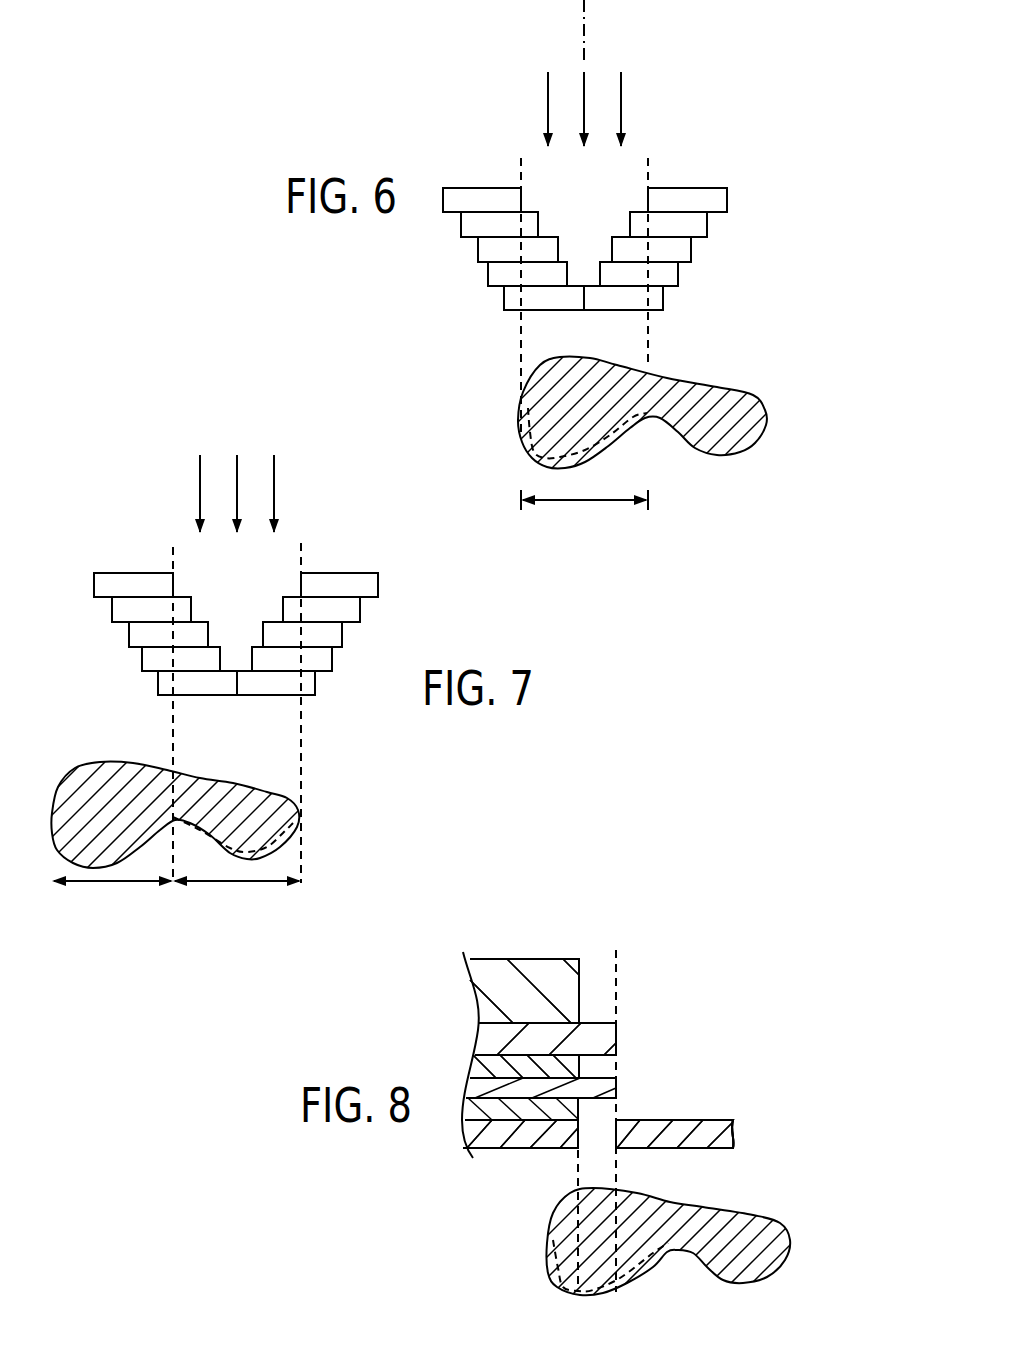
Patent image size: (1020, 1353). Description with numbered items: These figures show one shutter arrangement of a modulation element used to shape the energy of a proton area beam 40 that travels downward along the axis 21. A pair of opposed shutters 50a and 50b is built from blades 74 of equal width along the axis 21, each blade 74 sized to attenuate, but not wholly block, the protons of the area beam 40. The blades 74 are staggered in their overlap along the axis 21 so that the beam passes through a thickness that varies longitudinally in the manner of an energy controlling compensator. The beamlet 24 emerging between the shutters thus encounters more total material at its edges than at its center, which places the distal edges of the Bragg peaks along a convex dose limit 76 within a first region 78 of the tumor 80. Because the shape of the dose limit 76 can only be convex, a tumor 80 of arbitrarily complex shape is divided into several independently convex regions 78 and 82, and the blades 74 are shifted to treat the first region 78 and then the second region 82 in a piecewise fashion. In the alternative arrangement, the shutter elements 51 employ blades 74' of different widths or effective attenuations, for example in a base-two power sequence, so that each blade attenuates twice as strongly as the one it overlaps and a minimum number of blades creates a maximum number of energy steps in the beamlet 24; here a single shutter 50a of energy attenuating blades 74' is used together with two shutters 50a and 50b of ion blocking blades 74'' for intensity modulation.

In FIG. 6, the axis 21 is at (584, 20).
In FIG. 6, the area beam 40 is at (584, 92).
In FIG. 7, the area beam 40 is at (237, 478).
In FIG. 6, the shutter 50a is at (490, 152).
In FIG. 8, the shutter 50a is at (523, 934).
In FIG. 6, the shutter 50b is at (695, 150).
In FIG. 8, the shutter 50b is at (706, 1050).
In FIG. 6, the blades 74 is at (591, 228).
In FIG. 7, the blades 74 is at (244, 634).
In FIG. 8, the blades 74' is at (576, 1018).
In FIG. 8, the ion blocking blades 74'' is at (625, 1150).
In FIG. 6, the beamlet 24 is at (541, 335).
In FIG. 8, the beamlet 24 is at (600, 1172).
In FIG. 6, the convex dose limit 76 is at (535, 456).
In FIG. 7, the convex dose limit 76 is at (280, 845).
In FIG. 8, the convex dose limit 76 is at (560, 1288).
In FIG. 6, the first region 78 is at (583, 502).
In FIG. 7, the first region 78 is at (113, 883).
In FIG. 6, the tumor 80 is at (730, 397).
In FIG. 7, the tumor 80 is at (83, 787).
In FIG. 8, the tumor 80 is at (775, 1262).
In FIG. 7, the second region 82 is at (243, 883).
In FIG. 8, the shutter elements 51 is at (766, 1132).